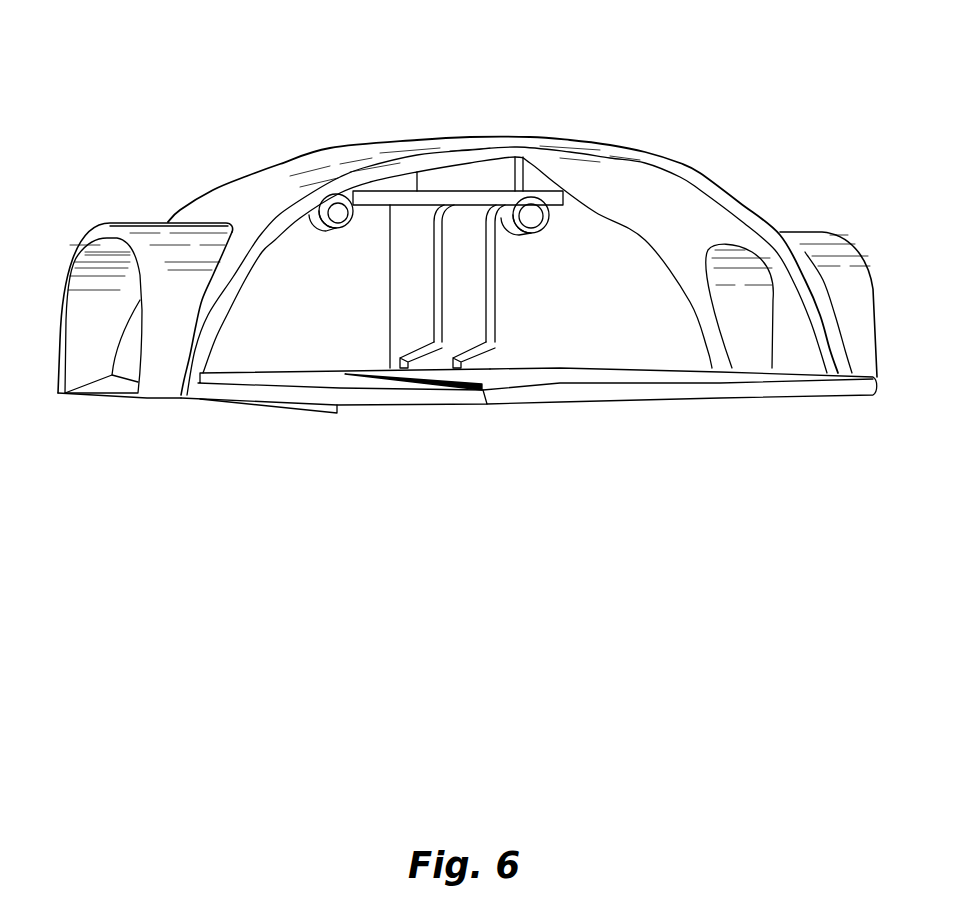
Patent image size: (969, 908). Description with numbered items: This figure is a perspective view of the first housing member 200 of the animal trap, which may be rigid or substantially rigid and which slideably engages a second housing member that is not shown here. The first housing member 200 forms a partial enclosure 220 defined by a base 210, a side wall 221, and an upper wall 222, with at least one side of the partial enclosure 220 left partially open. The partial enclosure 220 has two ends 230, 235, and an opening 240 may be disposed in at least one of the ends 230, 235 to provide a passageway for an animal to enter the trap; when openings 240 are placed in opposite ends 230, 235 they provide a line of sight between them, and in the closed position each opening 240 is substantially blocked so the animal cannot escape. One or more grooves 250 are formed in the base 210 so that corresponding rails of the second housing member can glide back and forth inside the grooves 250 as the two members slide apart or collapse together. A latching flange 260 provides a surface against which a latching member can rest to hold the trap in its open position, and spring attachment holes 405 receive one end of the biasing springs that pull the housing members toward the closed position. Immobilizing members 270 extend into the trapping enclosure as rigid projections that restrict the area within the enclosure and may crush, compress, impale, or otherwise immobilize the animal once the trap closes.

The first housing member 200 is at (279, 82).
The base 210 is at (367, 395).
The partial enclosure 220 is at (288, 343).
The side wall 221 is at (594, 308).
The upper wall 222 is at (257, 187).
The end 230 is at (163, 221).
The end 235 is at (785, 232).
The opening 240 is at (83, 313).
The groove 250 is at (485, 392).
The latching flange 260 is at (470, 202).
The immobilizing member 270 is at (430, 290).
The spring attachment hole 405 is at (343, 202).